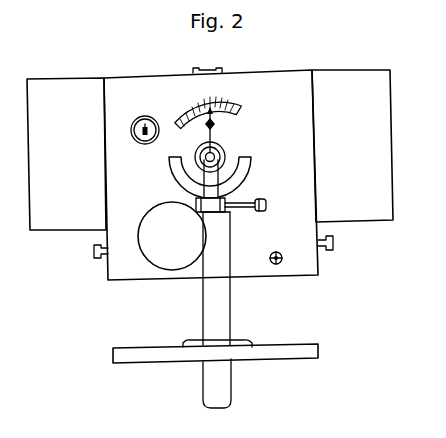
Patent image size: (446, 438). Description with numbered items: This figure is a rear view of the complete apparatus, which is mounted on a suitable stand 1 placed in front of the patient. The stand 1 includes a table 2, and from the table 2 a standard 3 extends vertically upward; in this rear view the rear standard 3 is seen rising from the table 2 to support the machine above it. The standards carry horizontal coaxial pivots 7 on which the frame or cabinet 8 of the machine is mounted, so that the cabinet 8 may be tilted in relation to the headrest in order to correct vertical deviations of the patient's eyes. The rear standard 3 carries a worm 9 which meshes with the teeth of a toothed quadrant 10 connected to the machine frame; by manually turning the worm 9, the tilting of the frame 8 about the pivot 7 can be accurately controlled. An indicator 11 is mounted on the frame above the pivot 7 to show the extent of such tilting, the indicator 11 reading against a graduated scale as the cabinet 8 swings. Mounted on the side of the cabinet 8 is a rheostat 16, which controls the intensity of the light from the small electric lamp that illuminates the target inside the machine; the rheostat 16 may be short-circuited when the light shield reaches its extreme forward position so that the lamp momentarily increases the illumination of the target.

The stand 1 is at (226, 380).
The table 2 is at (319, 351).
The standard 3 is at (224, 303).
The horizontal coaxial pivot 7 is at (222, 152).
The frame or cabinet 8 is at (210, 174).
The worm 9 is at (236, 200).
The quadrant 10 is at (179, 181).
The indicator 11 is at (238, 110).
The rheostat 16 is at (93, 251).